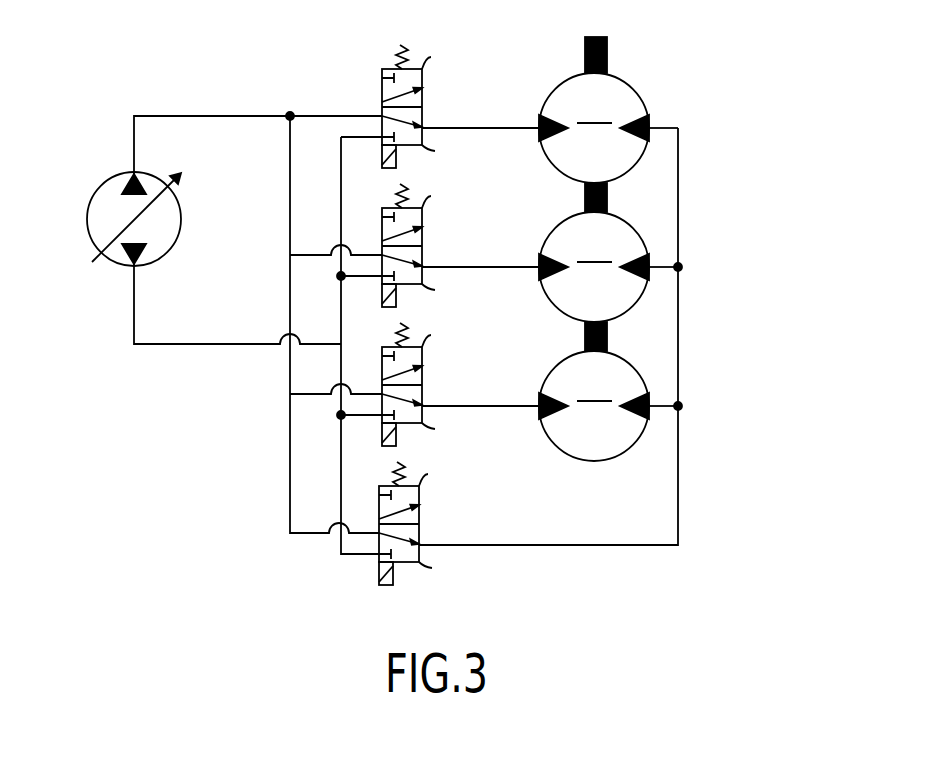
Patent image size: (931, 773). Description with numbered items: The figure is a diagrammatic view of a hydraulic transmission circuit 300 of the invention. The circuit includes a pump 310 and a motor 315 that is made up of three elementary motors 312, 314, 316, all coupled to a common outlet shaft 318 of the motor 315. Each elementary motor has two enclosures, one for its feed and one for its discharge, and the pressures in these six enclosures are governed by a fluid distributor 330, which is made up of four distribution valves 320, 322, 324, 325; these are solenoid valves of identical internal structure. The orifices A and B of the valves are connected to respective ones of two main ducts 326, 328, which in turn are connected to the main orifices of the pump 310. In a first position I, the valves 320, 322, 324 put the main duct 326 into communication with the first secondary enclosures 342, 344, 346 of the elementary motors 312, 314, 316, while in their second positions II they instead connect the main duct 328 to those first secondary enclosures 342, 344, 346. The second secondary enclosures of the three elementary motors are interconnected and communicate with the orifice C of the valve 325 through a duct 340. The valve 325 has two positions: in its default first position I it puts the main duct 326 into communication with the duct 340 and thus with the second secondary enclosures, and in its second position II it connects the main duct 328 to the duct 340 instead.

The hydraulic circuit 300 is at (735, 200).
The pump 310 is at (93, 198).
The elementary motor 312 is at (608, 128).
The elementary motor 314 is at (608, 252).
The motor 315 is at (660, 82).
The elementary motor 316 is at (608, 391).
The outlet shaft 318 is at (607, 52).
The distribution valve 320 is at (425, 77).
The distribution valve 322 is at (425, 216).
The distribution valve 324 is at (425, 355).
The distribution valve 325 is at (422, 494).
The main duct 326 is at (211, 344).
The main duct 328 is at (211, 116).
The fluid distributor 330 is at (238, 420).
The duct 340 is at (678, 478).
The first secondary enclosure 342 is at (509, 128).
The first secondary enclosure 344 is at (509, 267).
The first secondary enclosure 346 is at (507, 406).